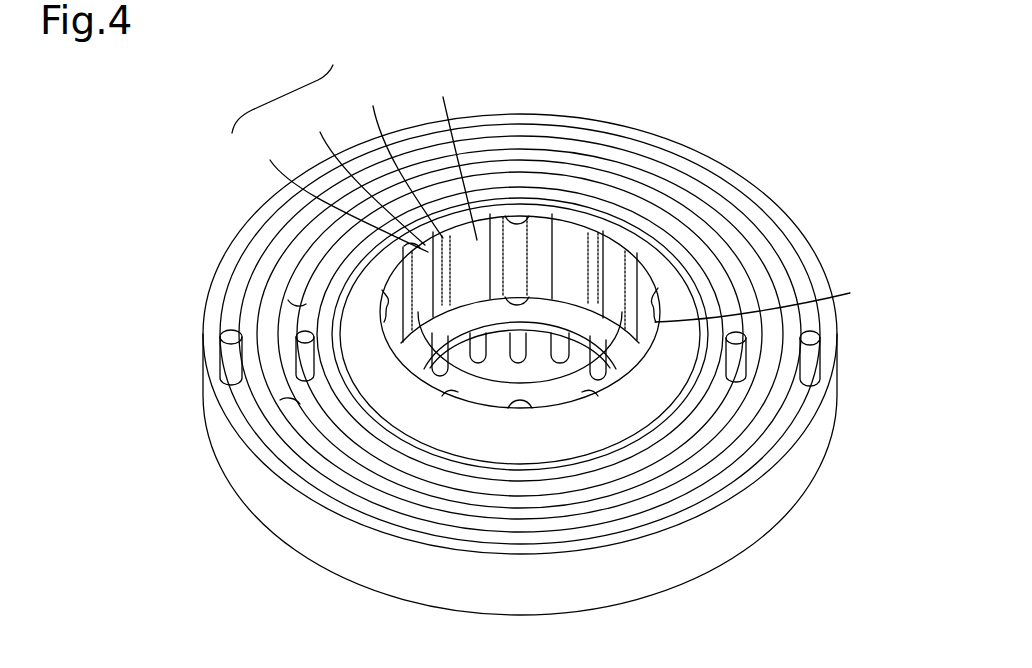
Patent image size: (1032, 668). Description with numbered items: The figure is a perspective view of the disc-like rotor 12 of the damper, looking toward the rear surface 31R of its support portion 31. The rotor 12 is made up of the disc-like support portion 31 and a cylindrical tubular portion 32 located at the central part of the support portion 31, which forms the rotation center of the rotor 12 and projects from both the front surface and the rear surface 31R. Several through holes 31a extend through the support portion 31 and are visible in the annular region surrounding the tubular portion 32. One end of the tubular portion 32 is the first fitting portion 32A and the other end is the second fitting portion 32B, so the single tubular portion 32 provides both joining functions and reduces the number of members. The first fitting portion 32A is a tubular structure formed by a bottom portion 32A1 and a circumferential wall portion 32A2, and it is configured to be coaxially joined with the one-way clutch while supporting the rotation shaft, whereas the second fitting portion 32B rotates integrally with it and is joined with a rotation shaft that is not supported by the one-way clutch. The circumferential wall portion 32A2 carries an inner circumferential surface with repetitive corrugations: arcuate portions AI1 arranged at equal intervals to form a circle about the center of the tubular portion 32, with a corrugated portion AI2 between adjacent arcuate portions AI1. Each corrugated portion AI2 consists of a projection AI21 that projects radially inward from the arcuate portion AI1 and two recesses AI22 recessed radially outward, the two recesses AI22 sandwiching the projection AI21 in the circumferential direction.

The rotor 12 is at (814, 196).
The support portion 31 is at (226, 332).
The rear surface of the support portion 31R is at (293, 352).
The through holes 31a is at (238, 377).
The tubular portion 32 is at (643, 397).
The first fitting portion 32A is at (433, 433).
The bottom portion 32A1 is at (497, 310).
The circumferential wall portion 32A2 is at (523, 443).
The second fitting portion 32B is at (551, 345).
The arcuate portions AI1 is at (658, 198).
The corrugated portion AI2 is at (282, 94).
The projection AI21 is at (354, 176).
The recesses AI22 is at (340, 166).